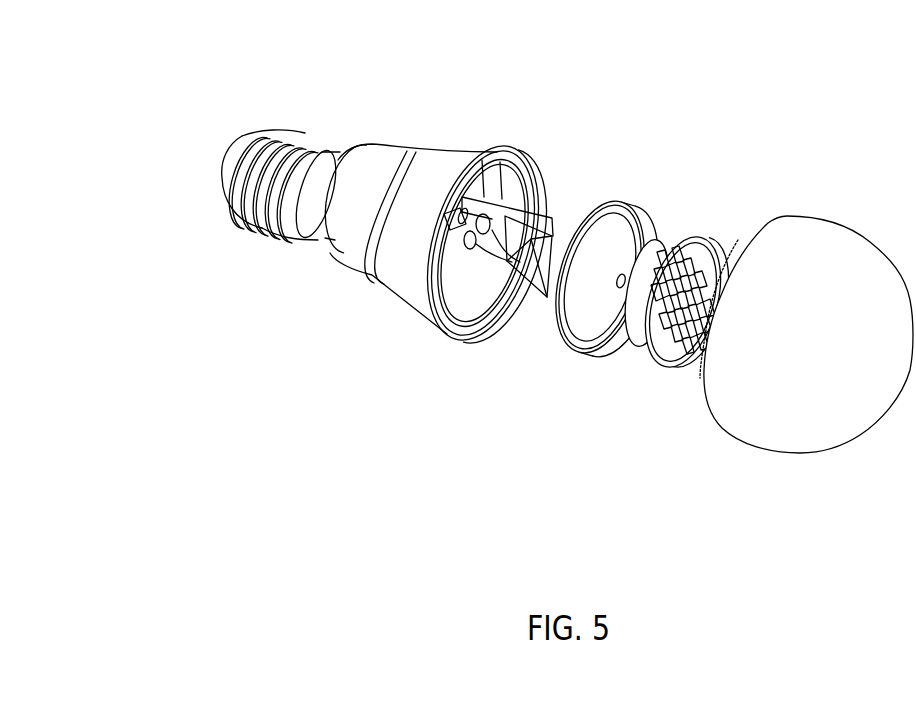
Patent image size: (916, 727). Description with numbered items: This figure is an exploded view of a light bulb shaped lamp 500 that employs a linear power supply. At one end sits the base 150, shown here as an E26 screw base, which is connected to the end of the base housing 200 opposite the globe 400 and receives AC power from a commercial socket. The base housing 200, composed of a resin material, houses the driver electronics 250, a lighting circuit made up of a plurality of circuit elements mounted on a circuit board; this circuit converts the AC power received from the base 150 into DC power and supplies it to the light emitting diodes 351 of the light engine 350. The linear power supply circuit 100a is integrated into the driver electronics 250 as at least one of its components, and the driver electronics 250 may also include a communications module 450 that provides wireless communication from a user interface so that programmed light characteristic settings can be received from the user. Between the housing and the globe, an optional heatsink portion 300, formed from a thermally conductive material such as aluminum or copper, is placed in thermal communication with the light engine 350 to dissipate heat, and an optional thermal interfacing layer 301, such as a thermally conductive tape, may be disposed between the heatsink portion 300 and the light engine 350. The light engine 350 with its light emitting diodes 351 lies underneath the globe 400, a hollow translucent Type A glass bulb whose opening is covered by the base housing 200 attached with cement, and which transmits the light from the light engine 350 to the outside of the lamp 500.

The base 150 is at (225, 180).
The base housing 200 is at (405, 249).
The driver electronics 250 is at (510, 281).
The communications module 450 is at (477, 217).
The linear power supply circuit 100a is at (527, 240).
The heatsink portion 300 is at (571, 350).
The thermal interfacing layer 301 is at (633, 323).
The light engine 350 is at (651, 354).
The light emitting diodes 351 is at (703, 250).
The globe 400 is at (760, 453).
The lamp 500 is at (710, 147).